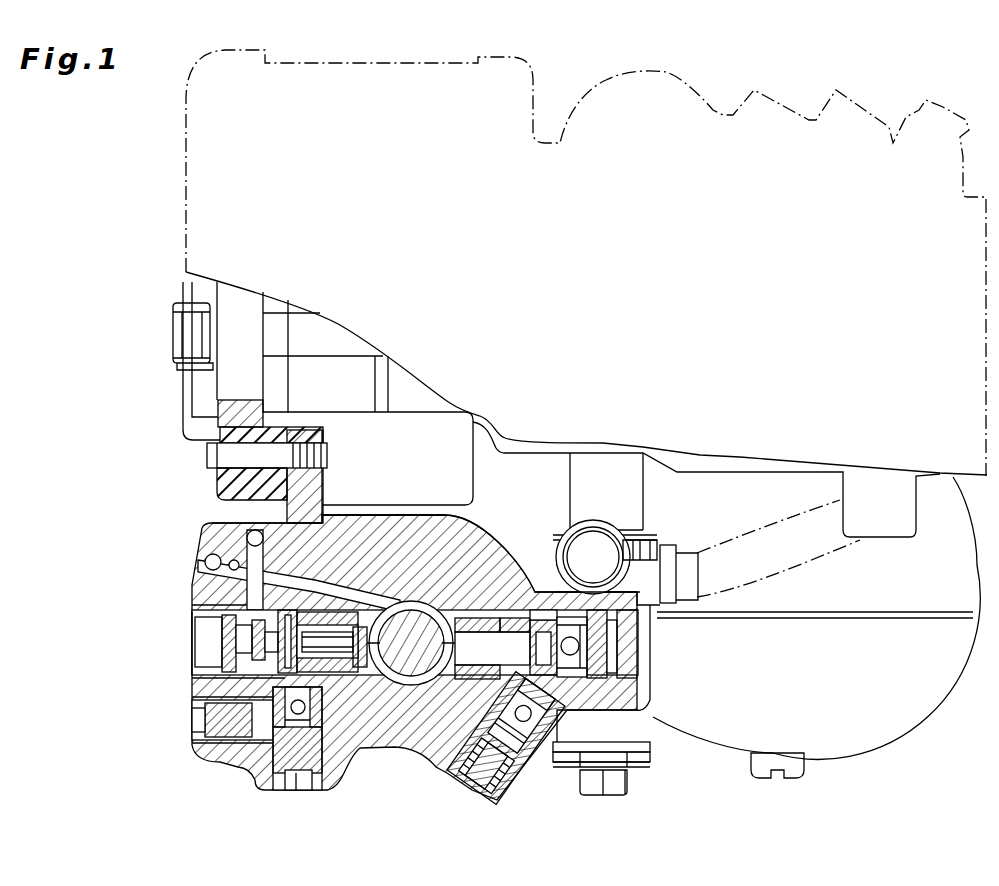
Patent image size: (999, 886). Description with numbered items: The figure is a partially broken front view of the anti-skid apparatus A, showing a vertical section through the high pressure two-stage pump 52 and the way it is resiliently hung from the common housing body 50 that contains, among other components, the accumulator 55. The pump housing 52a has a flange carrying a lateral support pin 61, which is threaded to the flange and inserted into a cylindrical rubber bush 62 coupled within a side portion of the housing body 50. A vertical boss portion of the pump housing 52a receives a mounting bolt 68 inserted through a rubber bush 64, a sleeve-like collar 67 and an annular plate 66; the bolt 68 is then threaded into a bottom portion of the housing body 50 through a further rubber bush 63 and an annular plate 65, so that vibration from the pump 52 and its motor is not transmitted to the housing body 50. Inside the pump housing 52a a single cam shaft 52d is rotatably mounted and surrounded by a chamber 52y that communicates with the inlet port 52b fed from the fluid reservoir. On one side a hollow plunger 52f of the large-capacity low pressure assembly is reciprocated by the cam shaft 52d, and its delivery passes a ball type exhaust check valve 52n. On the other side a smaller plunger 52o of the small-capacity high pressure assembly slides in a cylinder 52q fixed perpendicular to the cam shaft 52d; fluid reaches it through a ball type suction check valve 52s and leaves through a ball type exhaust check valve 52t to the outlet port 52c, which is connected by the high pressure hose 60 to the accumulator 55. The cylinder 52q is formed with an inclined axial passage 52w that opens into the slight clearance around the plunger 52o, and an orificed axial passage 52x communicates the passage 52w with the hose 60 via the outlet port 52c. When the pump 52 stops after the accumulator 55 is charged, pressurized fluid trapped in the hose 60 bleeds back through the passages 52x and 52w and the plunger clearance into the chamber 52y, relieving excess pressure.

The anti-skid apparatus A is at (516, 54).
The housing body 50 is at (223, 380).
The high pressure two-stage pump 52 is at (396, 753).
The pump housing 52a is at (362, 568).
The inlet port 52b is at (205, 578).
The outlet port 52c is at (586, 583).
The cam shaft 52d is at (411, 643).
The hollow plunger 52f is at (343, 627).
The exhaust check valve 52n is at (258, 767).
The plunger 52o is at (472, 638).
The cylinder 52q is at (497, 620).
The suction check valve 52s is at (518, 708).
The exhaust check valve 52t is at (580, 645).
The inclined axial passage 52w is at (517, 620).
The axial passage 52x is at (540, 620).
The chamber 52y is at (425, 605).
The accumulator 55 is at (945, 660).
The high pressure hose 60 is at (690, 580).
The support pin 61 is at (208, 455).
The rubber bush 62 is at (232, 484).
The rubber bush 63 is at (662, 553).
The rubber bush 64 is at (650, 752).
The annular plate 65 is at (652, 535).
The annular plate 66 is at (650, 765).
The collar 67 is at (600, 757).
The mounting bolt 68 is at (618, 790).